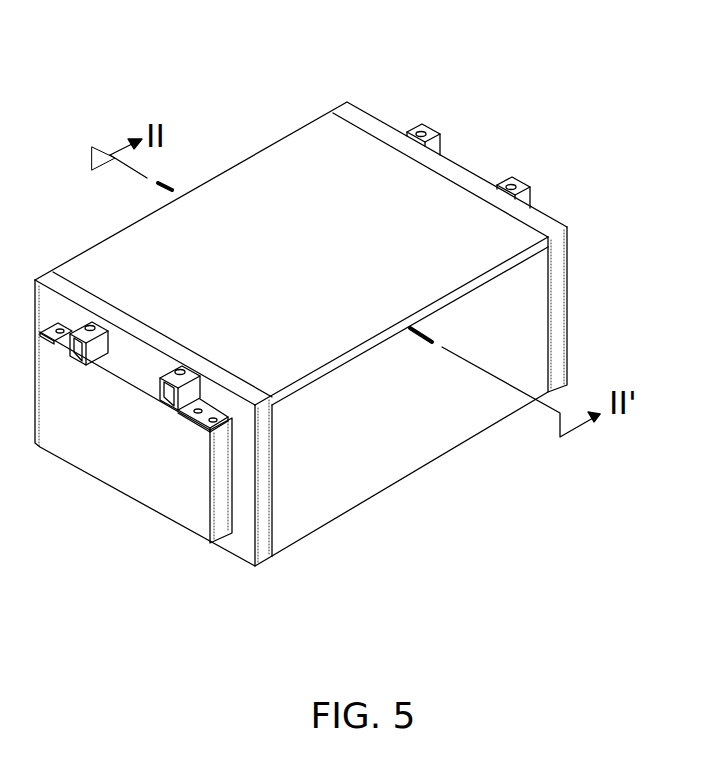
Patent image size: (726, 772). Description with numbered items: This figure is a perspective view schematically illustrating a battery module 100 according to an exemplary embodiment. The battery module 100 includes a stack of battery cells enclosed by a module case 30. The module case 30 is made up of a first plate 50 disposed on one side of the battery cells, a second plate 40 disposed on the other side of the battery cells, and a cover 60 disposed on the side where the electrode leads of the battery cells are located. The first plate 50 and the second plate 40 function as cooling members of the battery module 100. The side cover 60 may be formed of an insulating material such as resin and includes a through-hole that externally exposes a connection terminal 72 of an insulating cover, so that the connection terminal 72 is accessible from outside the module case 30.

The battery module 100 is at (262, 36).
The module case 30 is at (667, 198).
The second plate 40 is at (515, 235).
The first plate 50 is at (527, 298).
The cover 60 is at (560, 343).
The connection terminal 72 is at (188, 413).